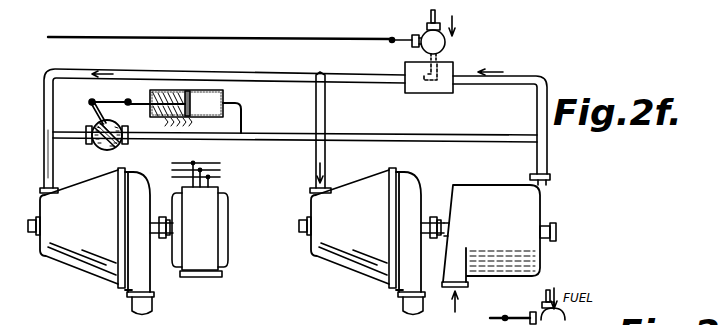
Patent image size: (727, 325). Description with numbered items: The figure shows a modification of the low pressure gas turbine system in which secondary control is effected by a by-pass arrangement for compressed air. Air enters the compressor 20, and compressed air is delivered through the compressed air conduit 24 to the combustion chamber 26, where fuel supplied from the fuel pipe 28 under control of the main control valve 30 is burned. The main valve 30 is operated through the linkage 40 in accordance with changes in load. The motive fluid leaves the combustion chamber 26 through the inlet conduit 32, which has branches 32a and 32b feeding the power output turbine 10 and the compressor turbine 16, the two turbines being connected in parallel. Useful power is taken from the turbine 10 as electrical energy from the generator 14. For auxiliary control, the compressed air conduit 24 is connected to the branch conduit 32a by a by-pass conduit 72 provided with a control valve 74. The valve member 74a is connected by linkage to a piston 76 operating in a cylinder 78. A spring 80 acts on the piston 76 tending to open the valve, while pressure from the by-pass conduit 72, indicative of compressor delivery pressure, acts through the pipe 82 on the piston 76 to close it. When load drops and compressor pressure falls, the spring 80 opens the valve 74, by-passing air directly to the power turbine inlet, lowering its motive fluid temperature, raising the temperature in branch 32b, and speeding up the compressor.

The power output turbine 10 is at (93, 258).
The generator 14 is at (212, 245).
The compressor turbine 16 is at (357, 266).
The compressor 20 is at (487, 190).
The compressed air conduit 24 is at (537, 83).
The combustion chamber 26 is at (446, 94).
The fuel pipe 28 is at (427, 24).
The main control valve 30 is at (446, 50).
The inlet conduit 32 is at (267, 74).
The branch inlet conduit 32a is at (53, 111).
The branch inlet conduit 32b is at (326, 118).
The linkage 40 is at (122, 32).
The by-pass conduit 72 is at (295, 140).
The control valve 74 is at (105, 151).
The valve member 74a is at (122, 147).
The piston 76 is at (190, 90).
The cylinder 78 is at (163, 90).
The spring 80 is at (173, 90).
The pipe 82 is at (247, 106).